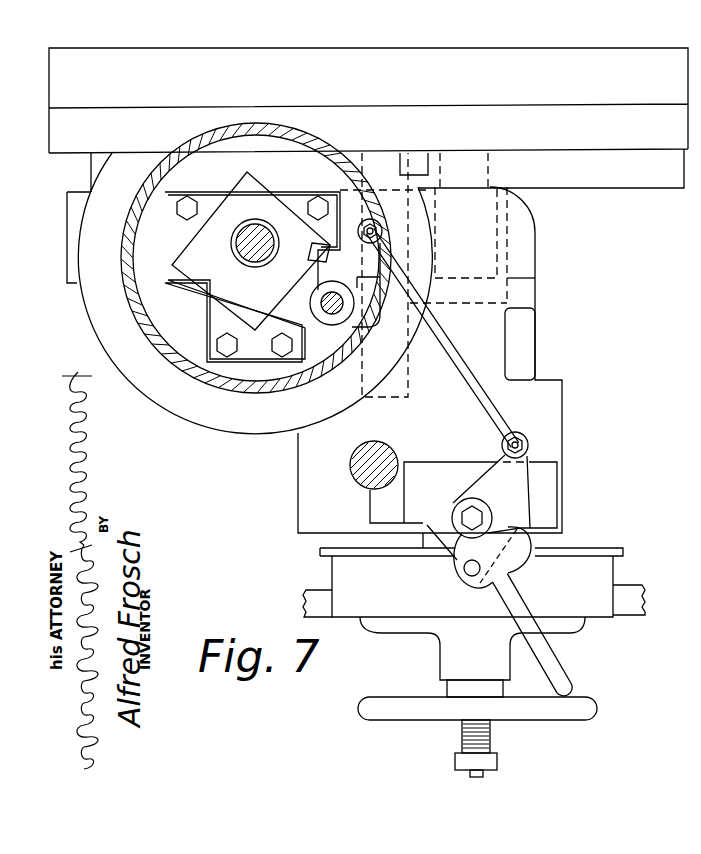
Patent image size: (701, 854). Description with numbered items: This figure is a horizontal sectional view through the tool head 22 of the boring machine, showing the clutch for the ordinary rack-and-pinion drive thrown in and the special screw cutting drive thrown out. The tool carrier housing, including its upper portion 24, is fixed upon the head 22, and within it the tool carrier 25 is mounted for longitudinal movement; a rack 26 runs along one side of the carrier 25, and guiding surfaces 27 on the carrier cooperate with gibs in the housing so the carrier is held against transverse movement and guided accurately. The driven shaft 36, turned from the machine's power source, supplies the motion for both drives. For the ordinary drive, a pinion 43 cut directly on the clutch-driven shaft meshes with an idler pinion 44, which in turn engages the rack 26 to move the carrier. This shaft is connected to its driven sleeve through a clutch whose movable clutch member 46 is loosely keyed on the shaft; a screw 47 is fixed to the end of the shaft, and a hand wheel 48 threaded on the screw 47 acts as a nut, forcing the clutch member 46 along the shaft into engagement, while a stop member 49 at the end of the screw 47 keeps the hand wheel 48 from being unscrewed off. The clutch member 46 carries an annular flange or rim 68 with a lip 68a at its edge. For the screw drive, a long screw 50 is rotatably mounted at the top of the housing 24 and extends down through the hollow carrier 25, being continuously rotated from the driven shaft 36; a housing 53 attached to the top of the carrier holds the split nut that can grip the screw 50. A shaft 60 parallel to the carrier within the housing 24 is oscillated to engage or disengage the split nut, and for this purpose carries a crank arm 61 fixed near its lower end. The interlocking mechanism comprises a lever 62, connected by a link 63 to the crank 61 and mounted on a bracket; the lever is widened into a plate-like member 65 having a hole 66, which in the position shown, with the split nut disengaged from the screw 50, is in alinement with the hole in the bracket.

The tool head 22 is at (658, 179).
The upper portion of tool carrier housing 24 is at (258, 380).
The tool carrier 25 is at (166, 240).
The rack 26 is at (345, 283).
The guiding surfaces 27 is at (200, 296).
The driven shaft 36 is at (390, 455).
The pinion 43 is at (512, 248).
The idler pinion 44 is at (410, 172).
The second clutch member 46 is at (418, 632).
The screw 47 is at (544, 746).
The hand wheel 48 is at (416, 688).
The stop member 49 is at (498, 763).
The long screw 50 is at (243, 246).
The housing 53 is at (251, 251).
The shaft 60 is at (325, 297).
The crank arm 61 is at (376, 268).
The lever 62 is at (560, 660).
The link 63 is at (458, 352).
The plate-like member 65 is at (530, 543).
The hole 66 is at (470, 572).
The annular flange or rim 68 is at (331, 569).
The lip 68a is at (358, 556).